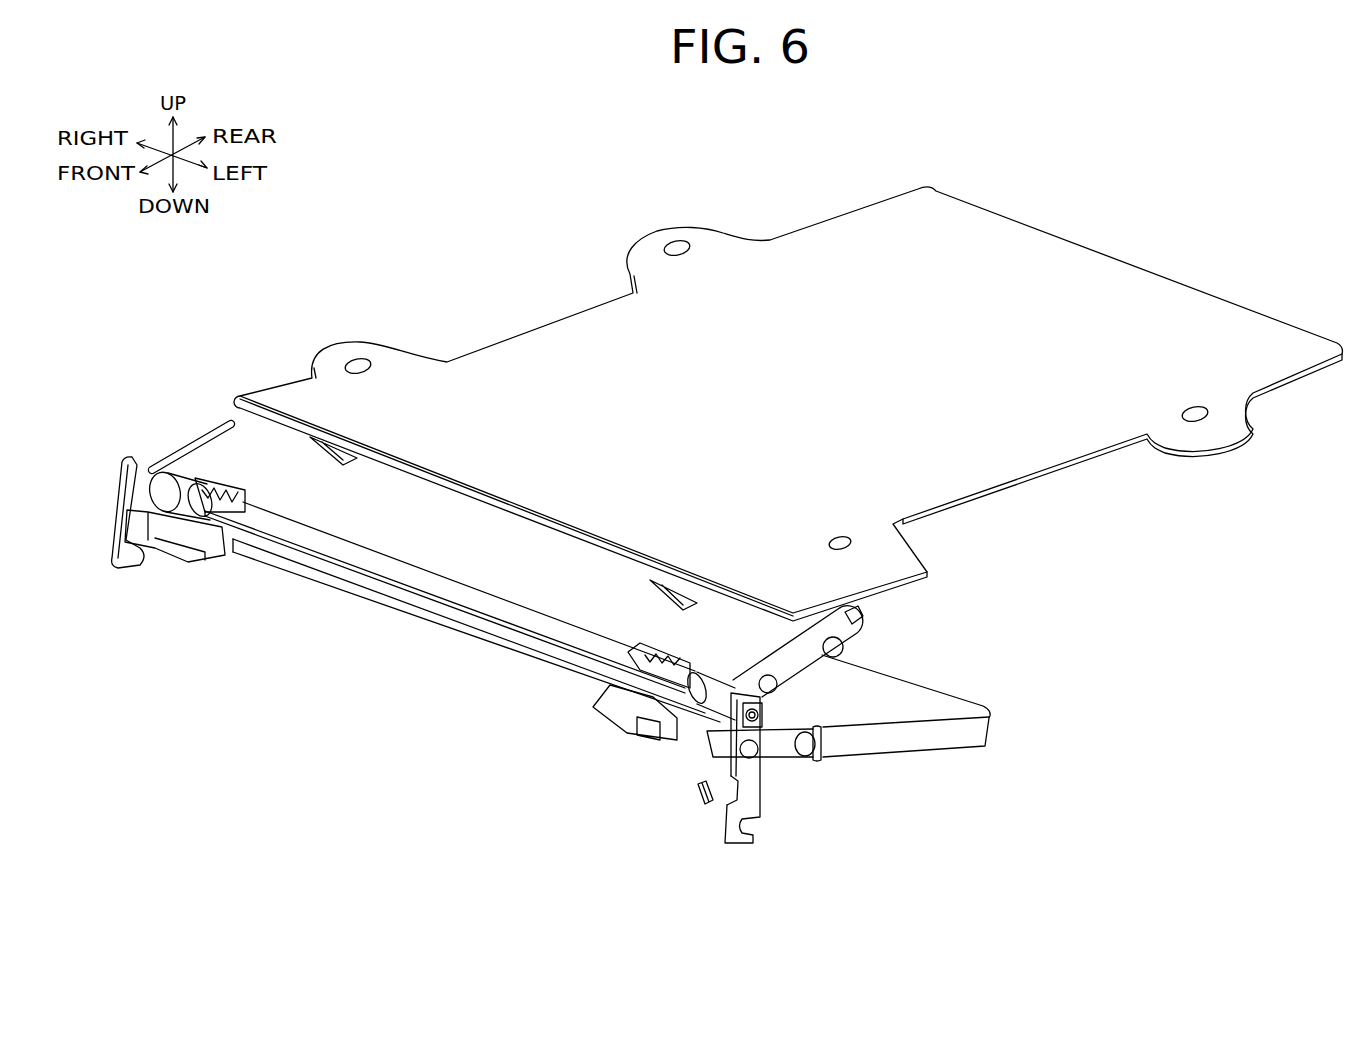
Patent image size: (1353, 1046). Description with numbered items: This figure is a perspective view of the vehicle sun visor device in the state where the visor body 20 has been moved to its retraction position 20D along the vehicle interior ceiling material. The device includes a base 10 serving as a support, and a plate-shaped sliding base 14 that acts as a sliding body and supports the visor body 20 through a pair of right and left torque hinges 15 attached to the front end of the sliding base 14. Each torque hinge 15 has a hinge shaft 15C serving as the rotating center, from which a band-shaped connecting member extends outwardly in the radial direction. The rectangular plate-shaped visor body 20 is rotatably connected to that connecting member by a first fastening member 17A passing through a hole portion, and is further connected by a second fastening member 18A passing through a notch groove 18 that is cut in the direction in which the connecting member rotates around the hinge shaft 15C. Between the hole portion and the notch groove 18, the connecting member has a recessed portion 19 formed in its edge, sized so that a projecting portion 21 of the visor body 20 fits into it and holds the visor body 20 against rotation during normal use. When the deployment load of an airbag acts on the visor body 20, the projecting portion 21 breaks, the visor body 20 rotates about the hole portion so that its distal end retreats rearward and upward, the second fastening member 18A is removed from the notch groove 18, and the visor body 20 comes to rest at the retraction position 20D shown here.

The base 10 is at (1055, 299).
The sliding base 14 is at (443, 538).
The torque hinge 15 is at (228, 430).
The hinge shaft 15C is at (762, 715).
The first fastening member 17A is at (762, 763).
The notch groove 18 is at (764, 794).
The second fastening member 18A is at (823, 753).
The recessed portion 19 is at (730, 797).
The visor body 20 is at (985, 706).
The retraction position 20D is at (1003, 725).
The projecting portion 21 is at (697, 800).